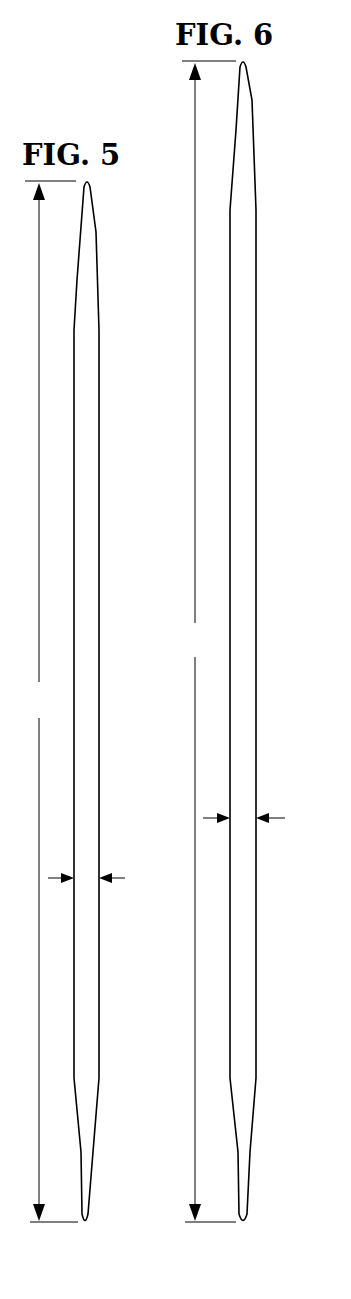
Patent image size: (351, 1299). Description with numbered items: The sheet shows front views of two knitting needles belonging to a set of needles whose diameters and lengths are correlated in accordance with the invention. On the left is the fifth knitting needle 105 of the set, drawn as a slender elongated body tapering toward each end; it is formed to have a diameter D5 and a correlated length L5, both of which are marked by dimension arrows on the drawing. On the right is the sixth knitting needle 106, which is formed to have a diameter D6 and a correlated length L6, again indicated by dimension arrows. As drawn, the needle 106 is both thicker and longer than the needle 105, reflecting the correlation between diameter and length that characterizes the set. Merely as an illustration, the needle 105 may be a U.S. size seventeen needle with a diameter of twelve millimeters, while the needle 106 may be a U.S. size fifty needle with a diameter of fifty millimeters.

In FIG. 5, the knitting needle 105 is at (87, 1151).
In FIG. 6, the knitting needle 106 is at (245, 1151).
In FIG. 5, the length L5 is at (51, 701).
In FIG. 5, the diameter D5 is at (102, 879).
In FIG. 6, the length L6 is at (209, 641).
In FIG. 6, the diameter D6 is at (260, 819).